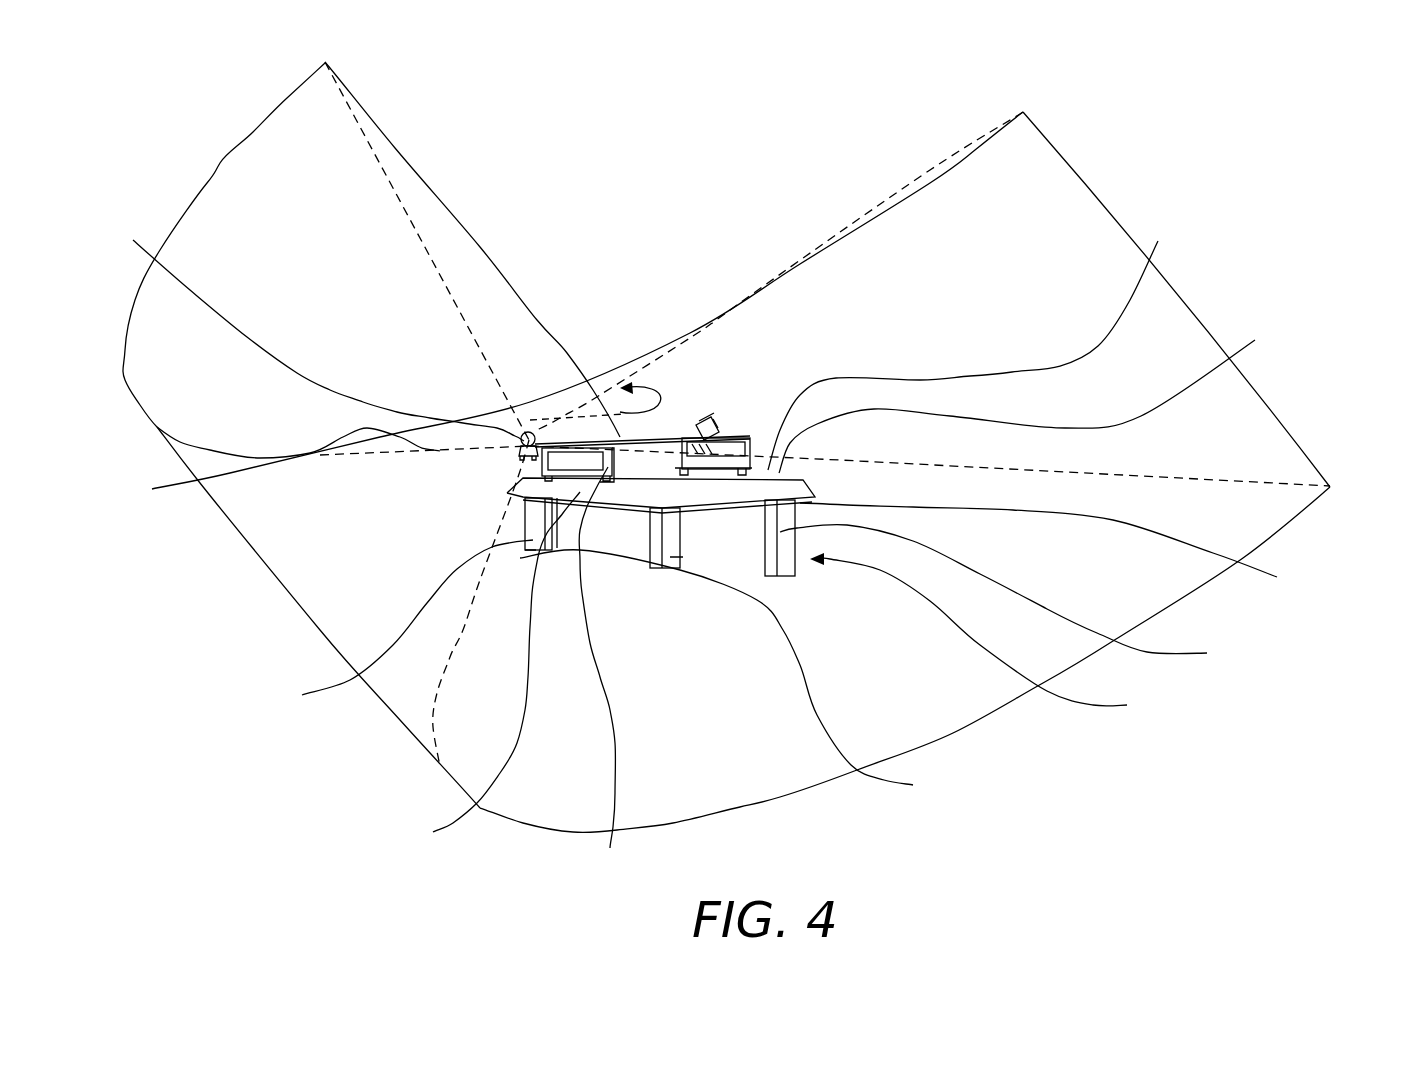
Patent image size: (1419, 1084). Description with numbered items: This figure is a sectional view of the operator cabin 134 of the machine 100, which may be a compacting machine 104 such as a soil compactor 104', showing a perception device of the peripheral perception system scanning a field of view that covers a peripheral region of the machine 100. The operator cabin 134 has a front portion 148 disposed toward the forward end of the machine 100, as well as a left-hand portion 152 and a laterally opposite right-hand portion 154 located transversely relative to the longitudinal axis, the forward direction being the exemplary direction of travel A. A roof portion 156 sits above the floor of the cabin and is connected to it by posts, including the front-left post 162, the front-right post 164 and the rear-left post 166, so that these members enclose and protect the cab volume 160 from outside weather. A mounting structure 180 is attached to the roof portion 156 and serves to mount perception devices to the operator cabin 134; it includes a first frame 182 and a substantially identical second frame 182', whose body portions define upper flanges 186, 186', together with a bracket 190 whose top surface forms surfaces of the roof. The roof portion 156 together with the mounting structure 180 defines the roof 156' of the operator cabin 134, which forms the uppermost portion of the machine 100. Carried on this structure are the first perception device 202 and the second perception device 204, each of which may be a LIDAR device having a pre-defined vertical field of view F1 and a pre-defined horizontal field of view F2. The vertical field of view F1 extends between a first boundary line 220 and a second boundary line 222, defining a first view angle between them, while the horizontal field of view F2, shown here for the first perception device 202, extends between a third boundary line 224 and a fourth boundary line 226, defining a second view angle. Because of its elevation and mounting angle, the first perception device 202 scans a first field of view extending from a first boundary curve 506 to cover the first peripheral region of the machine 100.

The machine 100 is at (1227, 170).
The compacting machine 104 is at (1290, 207).
The soil compactor 104' is at (1339, 234).
The operator cabin 134 is at (985, 634).
The front portion 148 is at (908, 534).
The left-hand portion 152 is at (488, 669).
The right-hand portion 154 is at (1035, 398).
The roof portion 156 is at (713, 314).
The roof 156' is at (613, 346).
The cab volume 160 is at (630, 533).
The front-left post 162 is at (734, 676).
The front-right post 164 is at (1002, 582).
The rear-left post 166 is at (409, 604).
The mounting structure 180 is at (660, 429).
The first frame 182 is at (602, 672).
The second frame 182' is at (976, 340).
The upper flange 186 is at (557, 356).
The upper flange 186' is at (735, 337).
The bracket 190 is at (622, 443).
The first perception device 202 is at (318, 328).
The second perception device 204 is at (748, 436).
The first boundary line 220 is at (566, 308).
The second boundary line 222 is at (450, 657).
The third boundary line 224 is at (383, 168).
The fourth boundary line 226 is at (874, 210).
The first boundary curve 506 is at (953, 733).
The vertical field of view F1 is at (254, 547).
The horizontal field of view F2 is at (207, 177).
The direction of travel A is at (1389, 426).